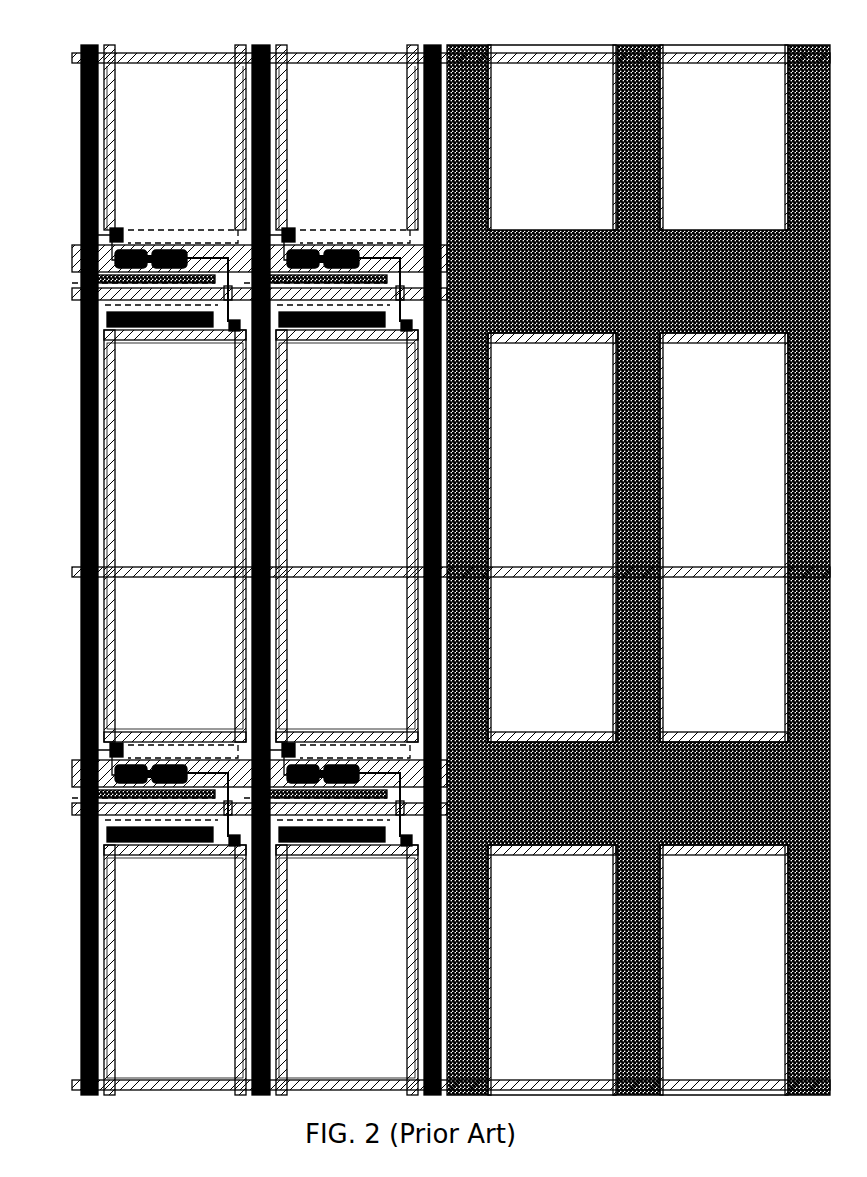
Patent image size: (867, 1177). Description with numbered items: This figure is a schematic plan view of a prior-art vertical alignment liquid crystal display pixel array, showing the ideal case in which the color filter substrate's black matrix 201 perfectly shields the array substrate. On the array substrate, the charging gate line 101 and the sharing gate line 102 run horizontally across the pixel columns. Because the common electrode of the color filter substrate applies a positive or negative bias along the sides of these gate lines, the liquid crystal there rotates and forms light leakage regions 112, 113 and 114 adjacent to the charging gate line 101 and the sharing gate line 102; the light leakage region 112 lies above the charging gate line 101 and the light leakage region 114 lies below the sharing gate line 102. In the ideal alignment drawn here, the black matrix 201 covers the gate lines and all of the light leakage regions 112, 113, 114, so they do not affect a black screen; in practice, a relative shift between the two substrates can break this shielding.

The charging gate line 101 is at (75, 252).
The sharing gate line 102 is at (75, 295).
The light leakage region 112 is at (112, 232).
The light leakage region 113 is at (82, 282).
The light leakage region 114 is at (108, 316).
The black matrix 201 is at (470, 50).